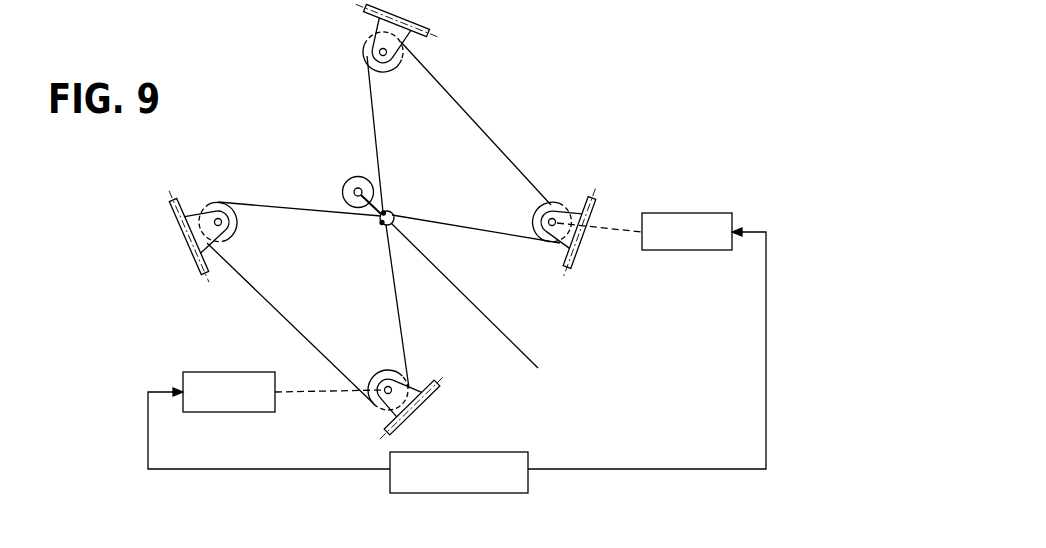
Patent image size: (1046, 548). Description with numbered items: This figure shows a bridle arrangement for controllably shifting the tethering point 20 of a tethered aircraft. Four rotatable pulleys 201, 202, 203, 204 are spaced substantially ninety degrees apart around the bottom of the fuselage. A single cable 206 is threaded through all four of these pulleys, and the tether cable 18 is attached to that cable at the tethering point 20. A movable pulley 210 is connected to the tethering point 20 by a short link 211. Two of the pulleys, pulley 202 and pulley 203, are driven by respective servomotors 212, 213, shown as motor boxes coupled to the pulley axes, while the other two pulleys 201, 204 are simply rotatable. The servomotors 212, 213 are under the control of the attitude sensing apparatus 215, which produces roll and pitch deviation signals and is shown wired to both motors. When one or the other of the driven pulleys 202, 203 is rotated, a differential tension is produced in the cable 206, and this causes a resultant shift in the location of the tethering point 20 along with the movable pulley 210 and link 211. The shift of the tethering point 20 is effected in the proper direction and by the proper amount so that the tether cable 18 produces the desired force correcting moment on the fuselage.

The tether cable 18 is at (497, 331).
The tethering point 20 is at (392, 211).
The rotatable pulley 201 is at (366, 46).
The rotatable pulley 202 is at (549, 200).
The rotatable pulley 203 is at (392, 370).
The rotatable pulley 204 is at (237, 235).
The cable 206 is at (472, 108).
The movable pulley 210 is at (347, 184).
The short link 211 is at (374, 211).
The servomotor 212 is at (672, 213).
The servomotor 213 is at (265, 372).
The attitude sensing apparatus 215 is at (462, 452).